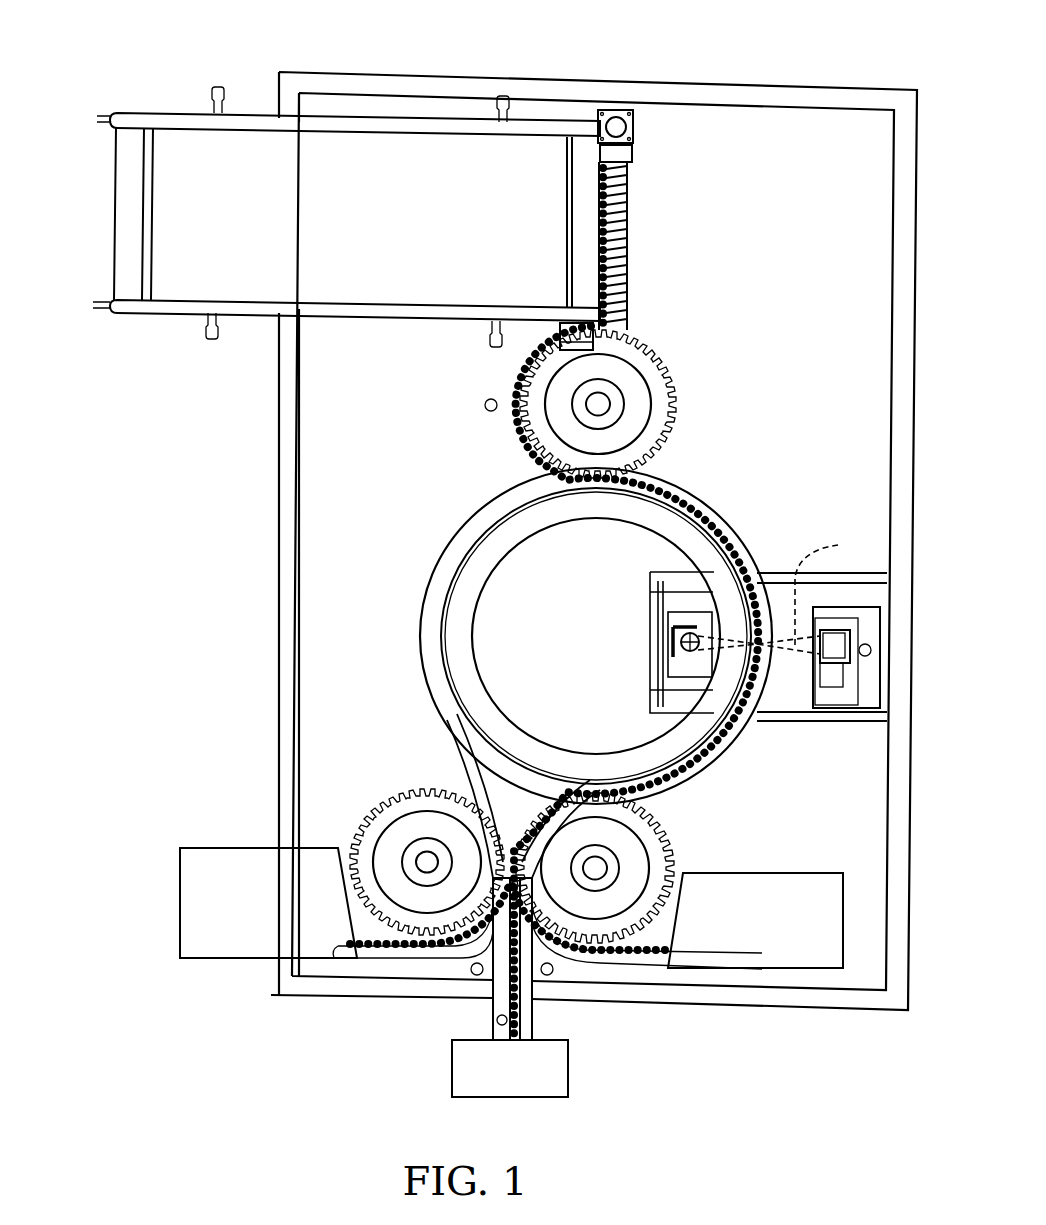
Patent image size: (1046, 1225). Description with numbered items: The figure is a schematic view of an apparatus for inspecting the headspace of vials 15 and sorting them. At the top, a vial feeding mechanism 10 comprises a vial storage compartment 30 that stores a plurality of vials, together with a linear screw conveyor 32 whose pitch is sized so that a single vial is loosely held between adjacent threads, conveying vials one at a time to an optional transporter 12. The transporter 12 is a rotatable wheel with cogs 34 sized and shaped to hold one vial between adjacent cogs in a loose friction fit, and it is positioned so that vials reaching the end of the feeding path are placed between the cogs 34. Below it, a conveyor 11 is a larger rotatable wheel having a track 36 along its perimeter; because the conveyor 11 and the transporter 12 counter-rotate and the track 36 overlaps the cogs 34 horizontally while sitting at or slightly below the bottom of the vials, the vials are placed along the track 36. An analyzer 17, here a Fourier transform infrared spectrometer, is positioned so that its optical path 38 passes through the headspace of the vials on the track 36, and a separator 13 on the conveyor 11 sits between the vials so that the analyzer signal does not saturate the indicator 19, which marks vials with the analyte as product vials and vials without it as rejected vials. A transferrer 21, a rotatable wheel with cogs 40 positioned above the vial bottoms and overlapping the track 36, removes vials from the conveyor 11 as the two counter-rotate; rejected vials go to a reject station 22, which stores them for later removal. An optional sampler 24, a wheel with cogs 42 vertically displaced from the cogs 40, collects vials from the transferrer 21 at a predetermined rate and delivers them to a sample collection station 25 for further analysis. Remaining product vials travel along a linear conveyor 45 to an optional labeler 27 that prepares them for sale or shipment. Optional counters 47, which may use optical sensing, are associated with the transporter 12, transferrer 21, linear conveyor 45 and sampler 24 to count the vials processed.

The vial feeding mechanism 10 is at (368, 116).
The conveyor 11 is at (703, 508).
The transporter 12 is at (666, 410).
The separator 13 is at (745, 558).
The vials 15 is at (614, 231).
The analyzer 17 is at (802, 720).
The indicator 19 is at (597, 653).
The transferrer 21 is at (652, 830).
The reject station 22 is at (742, 938).
The sampler 24 is at (392, 802).
The sample collection station 25 is at (247, 918).
The labeler 27 is at (496, 1088).
The vial storage compartment 30 is at (332, 225).
The screw conveyor 32 is at (634, 173).
The cogs 34 is at (679, 372).
The track 36 is at (482, 523).
The optical path 38 is at (784, 592).
The cogs 40 is at (690, 868).
The cogs 42 is at (440, 788).
The linear conveyor 45 is at (536, 1022).
The counters 47 is at (484, 408).